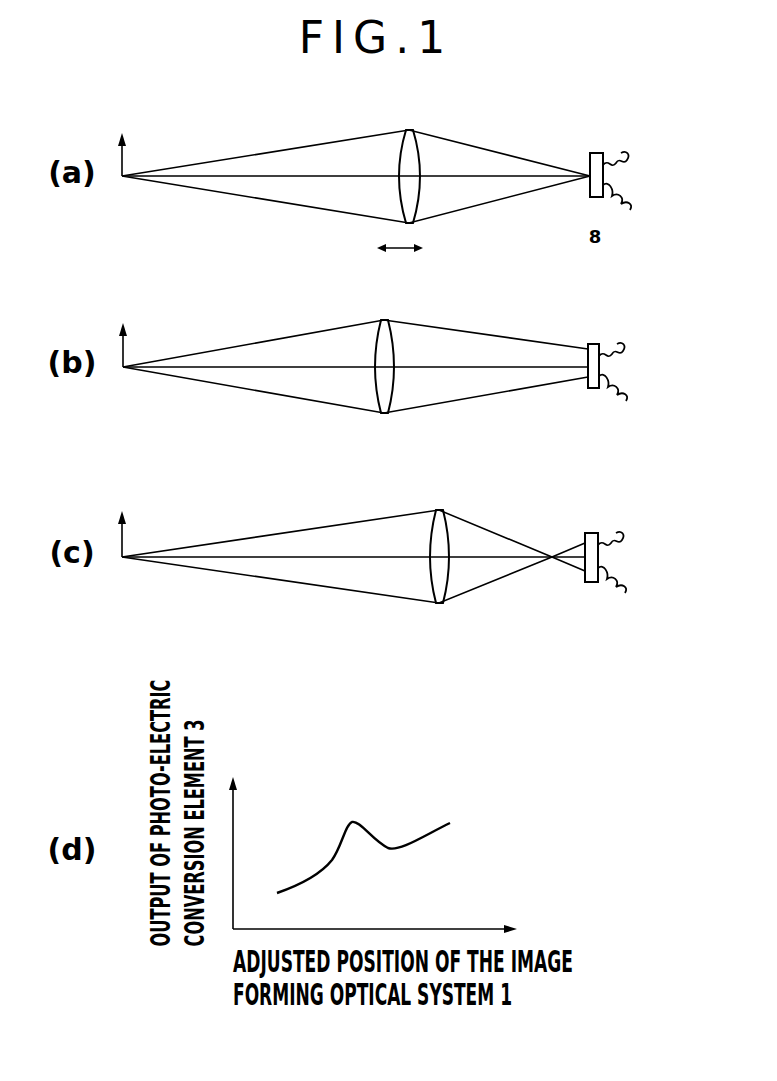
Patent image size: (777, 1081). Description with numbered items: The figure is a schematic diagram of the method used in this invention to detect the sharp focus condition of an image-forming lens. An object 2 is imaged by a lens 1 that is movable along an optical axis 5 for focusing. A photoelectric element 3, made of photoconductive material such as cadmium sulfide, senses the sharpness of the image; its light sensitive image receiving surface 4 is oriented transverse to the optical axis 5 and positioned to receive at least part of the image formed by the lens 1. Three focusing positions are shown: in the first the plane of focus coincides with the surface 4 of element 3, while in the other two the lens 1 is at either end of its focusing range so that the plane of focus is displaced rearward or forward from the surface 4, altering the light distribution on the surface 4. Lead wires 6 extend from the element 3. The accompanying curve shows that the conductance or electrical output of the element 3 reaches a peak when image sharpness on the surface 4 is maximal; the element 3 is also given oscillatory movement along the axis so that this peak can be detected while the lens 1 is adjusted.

The lens 1 is at (409, 130).
The object 2 is at (125, 170).
The photoelectric element 3 is at (595, 153).
The light sensitive image receiving surface 4 is at (589, 162).
The optical axis 5 is at (312, 178).
The lead wires 6 is at (622, 153).